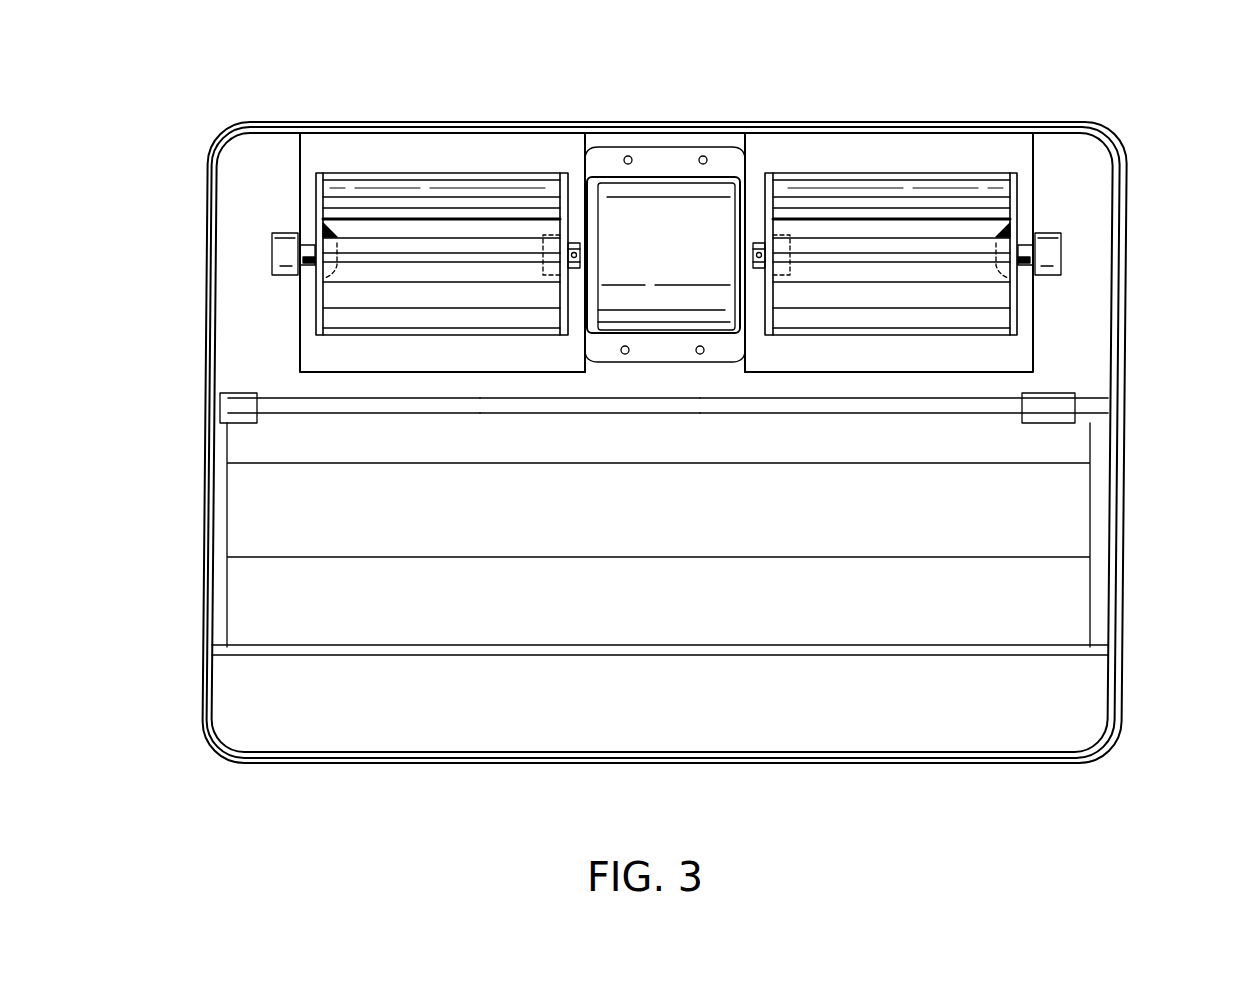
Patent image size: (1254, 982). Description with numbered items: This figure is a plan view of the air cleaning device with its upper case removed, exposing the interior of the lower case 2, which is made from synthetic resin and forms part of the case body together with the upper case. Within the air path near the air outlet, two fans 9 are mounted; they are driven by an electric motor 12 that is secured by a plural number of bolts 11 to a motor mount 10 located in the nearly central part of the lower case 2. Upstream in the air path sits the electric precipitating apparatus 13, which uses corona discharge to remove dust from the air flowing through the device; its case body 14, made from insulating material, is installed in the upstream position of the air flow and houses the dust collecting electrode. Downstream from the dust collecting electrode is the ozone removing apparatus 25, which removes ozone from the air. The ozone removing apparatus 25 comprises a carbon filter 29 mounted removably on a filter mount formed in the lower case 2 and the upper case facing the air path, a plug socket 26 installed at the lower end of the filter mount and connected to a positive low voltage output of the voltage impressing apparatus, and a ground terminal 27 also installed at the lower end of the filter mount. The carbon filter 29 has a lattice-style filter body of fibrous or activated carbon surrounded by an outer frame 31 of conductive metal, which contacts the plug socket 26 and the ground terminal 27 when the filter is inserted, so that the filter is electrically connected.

The lower case 2 is at (1127, 298).
The fan 9 is at (467, 175).
The motor mount 10 is at (598, 142).
The bolt 11 is at (628, 155).
The electric motor 12 is at (660, 178).
The electric precipitating apparatus 13 is at (580, 658).
The case body 14 is at (747, 638).
The ozone removing apparatus 25 is at (455, 417).
The plug socket 26 is at (240, 393).
The ground terminal 27 is at (1058, 392).
The carbon filter 29 is at (570, 412).
The outer frame 31 is at (797, 413).